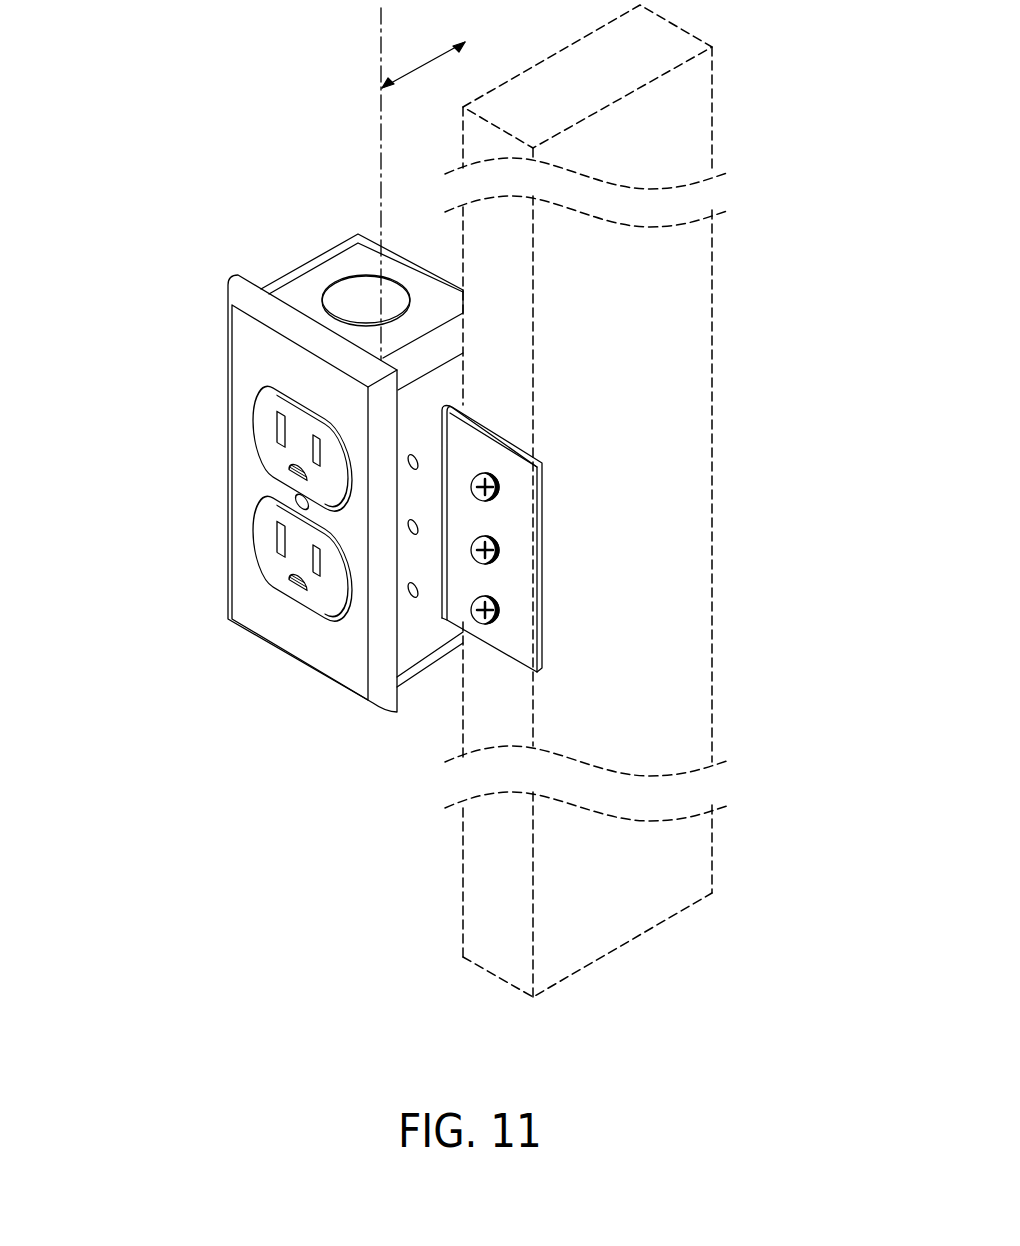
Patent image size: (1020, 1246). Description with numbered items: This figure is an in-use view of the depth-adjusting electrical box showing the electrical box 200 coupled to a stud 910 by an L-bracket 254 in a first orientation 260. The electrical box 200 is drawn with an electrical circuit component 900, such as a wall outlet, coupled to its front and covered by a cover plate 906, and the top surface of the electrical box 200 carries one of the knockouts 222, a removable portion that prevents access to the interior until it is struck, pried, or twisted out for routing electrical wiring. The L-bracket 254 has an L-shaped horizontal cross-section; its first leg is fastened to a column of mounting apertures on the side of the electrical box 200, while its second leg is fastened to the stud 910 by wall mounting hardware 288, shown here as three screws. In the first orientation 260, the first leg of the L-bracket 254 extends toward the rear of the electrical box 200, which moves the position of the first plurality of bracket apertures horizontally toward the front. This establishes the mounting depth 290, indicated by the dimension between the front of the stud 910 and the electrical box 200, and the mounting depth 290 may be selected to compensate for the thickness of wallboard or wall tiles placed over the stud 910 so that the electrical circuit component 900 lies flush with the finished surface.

The electrical box 200 is at (327, 253).
The knockouts 222 is at (323, 298).
The L-bracket 254 is at (527, 452).
The first orientation 260 is at (170, 777).
The wall mounting hardware 288 is at (500, 488).
The mounting depth 290 is at (419, 68).
The electrical circuit component 900 is at (273, 593).
The cover plate 906 is at (228, 350).
The stud 910 is at (665, 922).